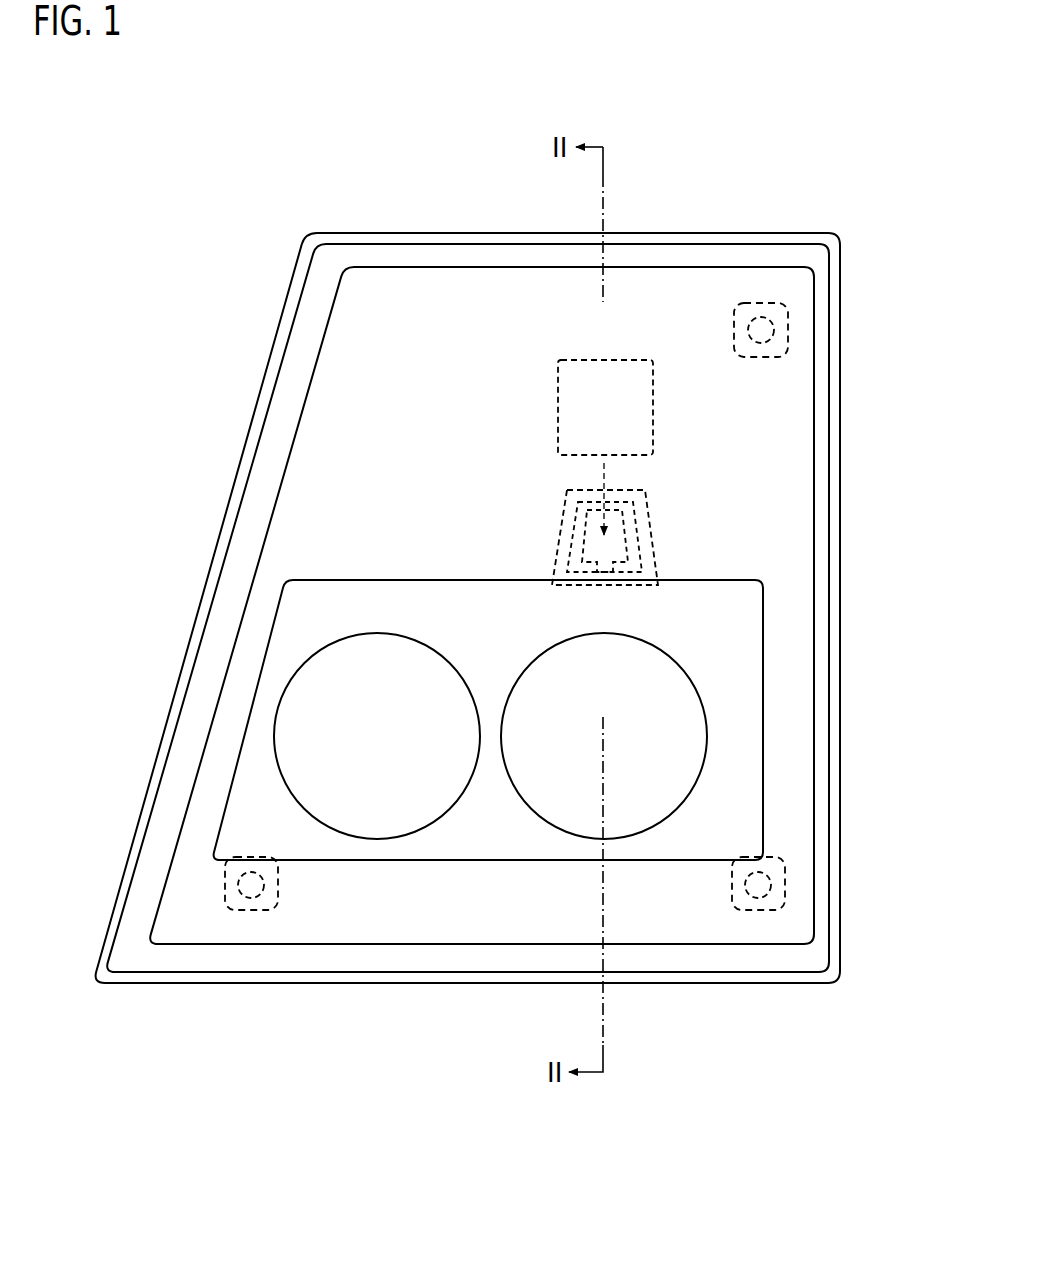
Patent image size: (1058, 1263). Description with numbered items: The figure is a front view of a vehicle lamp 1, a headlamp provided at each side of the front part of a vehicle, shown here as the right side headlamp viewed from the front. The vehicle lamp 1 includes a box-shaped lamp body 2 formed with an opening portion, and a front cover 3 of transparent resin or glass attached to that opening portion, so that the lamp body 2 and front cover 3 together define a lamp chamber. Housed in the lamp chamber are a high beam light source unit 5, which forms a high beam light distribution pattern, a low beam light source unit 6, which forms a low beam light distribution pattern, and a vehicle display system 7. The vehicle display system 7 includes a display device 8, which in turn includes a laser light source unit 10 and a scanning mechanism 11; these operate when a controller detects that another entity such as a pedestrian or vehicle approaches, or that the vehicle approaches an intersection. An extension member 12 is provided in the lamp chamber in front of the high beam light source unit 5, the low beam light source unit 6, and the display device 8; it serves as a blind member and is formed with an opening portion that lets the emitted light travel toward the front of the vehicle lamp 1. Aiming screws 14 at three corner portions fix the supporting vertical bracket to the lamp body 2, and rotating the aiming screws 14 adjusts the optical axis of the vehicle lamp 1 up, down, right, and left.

The vehicle lamp 1 is at (307, 148).
The lamp body 2 is at (835, 428).
The front cover 3 is at (823, 510).
The high beam light source unit 5 is at (363, 680).
The low beam light source unit 6 is at (648, 668).
The vehicle display system 7 is at (664, 312).
The display device 8 is at (556, 472).
The laser light source unit 10 is at (558, 397).
The scanning mechanism 11 is at (558, 515).
The extension member 12 is at (342, 380).
The aiming screws 14 is at (757, 312).